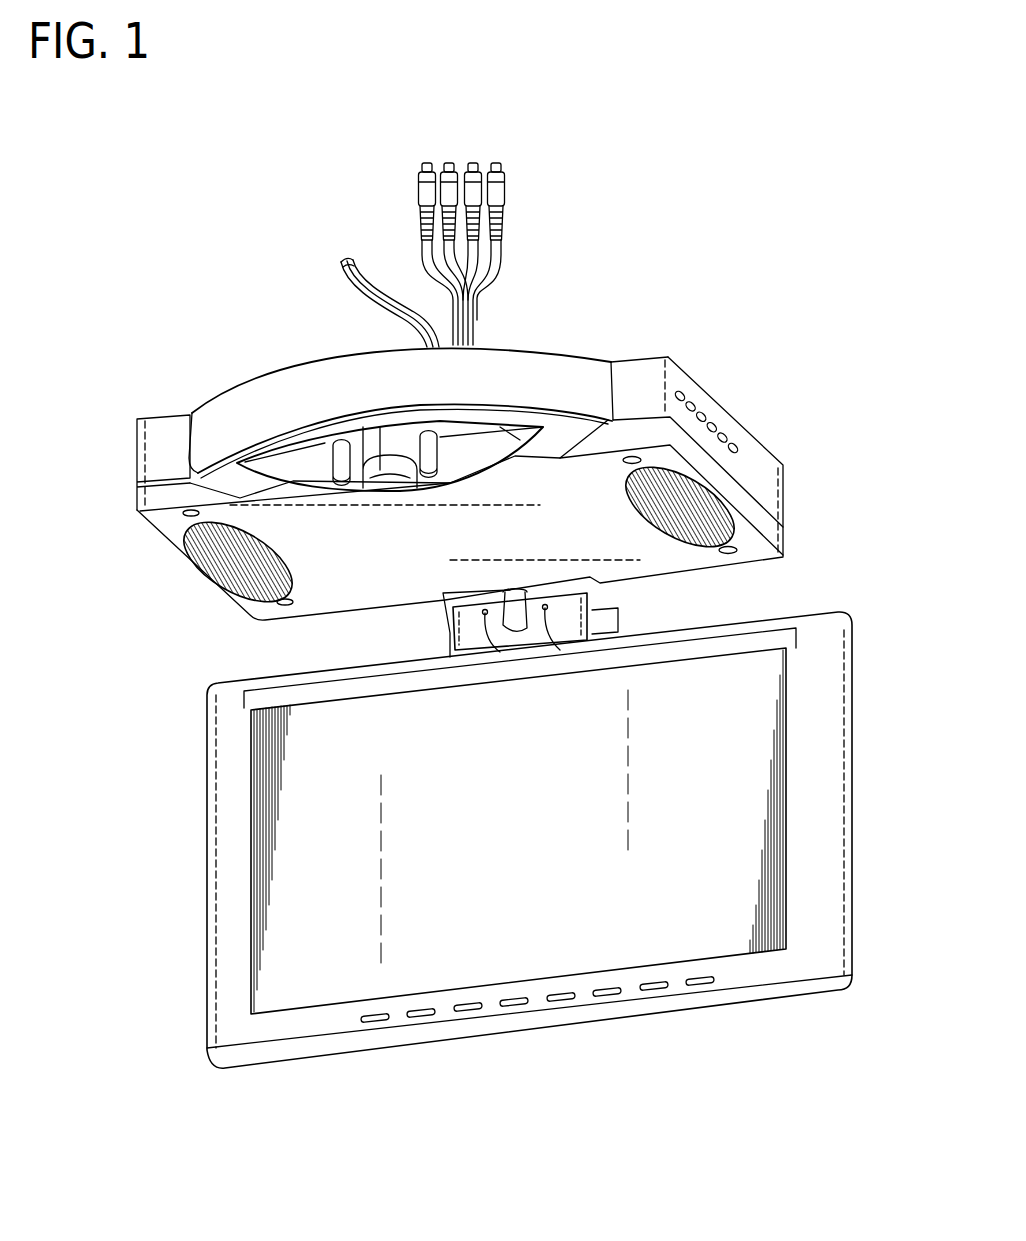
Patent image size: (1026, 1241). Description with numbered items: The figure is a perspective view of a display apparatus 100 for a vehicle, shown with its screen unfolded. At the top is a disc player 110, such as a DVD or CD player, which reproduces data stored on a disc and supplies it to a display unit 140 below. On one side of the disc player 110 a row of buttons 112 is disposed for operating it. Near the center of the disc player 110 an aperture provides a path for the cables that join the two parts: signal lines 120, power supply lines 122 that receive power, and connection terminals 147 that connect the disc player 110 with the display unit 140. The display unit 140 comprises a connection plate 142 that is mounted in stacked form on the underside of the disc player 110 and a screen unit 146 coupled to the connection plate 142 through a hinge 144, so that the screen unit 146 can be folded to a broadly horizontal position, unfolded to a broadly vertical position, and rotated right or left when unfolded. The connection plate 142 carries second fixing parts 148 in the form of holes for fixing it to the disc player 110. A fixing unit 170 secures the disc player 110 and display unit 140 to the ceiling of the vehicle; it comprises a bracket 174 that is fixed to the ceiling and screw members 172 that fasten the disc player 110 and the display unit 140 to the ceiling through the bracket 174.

The display apparatus 100 is at (693, 359).
The disc player 110 is at (580, 389).
The buttons 112 is at (681, 394).
The signal lines 120 is at (500, 259).
The power supply lines 122 is at (432, 326).
The display unit 140 is at (841, 610).
The connection plate 142 is at (720, 480).
The hinge 144 is at (475, 630).
The screen unit 146 is at (340, 866).
The connection terminals 147 is at (413, 180).
The second fixing parts 148 is at (185, 516).
The fixing unit 170 is at (316, 354).
The screw members 172 is at (188, 520).
The bracket 174 is at (163, 428).